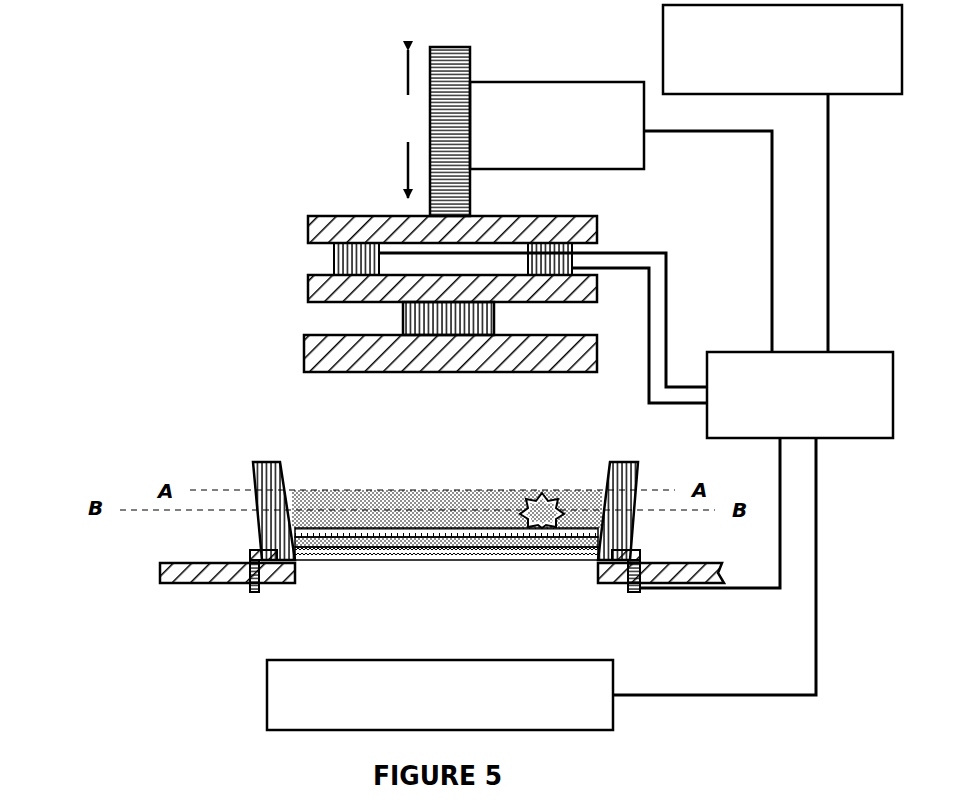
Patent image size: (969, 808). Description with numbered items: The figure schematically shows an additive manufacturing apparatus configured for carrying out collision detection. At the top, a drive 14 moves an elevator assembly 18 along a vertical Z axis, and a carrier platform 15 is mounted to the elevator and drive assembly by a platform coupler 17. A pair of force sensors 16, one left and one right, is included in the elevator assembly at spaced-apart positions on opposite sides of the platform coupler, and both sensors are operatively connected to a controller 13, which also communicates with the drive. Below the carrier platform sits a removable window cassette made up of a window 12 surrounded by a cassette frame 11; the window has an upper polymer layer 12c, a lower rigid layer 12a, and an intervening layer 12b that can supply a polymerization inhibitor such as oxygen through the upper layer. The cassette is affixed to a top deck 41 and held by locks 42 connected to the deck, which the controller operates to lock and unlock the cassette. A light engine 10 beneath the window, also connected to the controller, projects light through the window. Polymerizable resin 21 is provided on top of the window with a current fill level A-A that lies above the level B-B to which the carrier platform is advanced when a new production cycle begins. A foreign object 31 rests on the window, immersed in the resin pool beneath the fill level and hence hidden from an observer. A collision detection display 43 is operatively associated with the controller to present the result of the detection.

The light engine 10 is at (440, 695).
The cassette frame 11 is at (267, 475).
The window 12 is at (527, 586).
The lower rigid layer 12a is at (395, 555).
The intervening layer 12b is at (436, 545).
The upper polymer layer 12c is at (473, 532).
The controller 13 is at (753, 413).
The drive 14 is at (557, 125).
The carrier platform 15 is at (320, 362).
The force sensors 16 is at (650, 218).
The platform coupler 17 is at (420, 320).
The elevator assembly 18 is at (418, 287).
The resin 21 is at (385, 498).
The foreign object 31 is at (528, 500).
The top deck 41 is at (200, 580).
The locks 42 is at (250, 590).
The display 43 is at (782, 178).